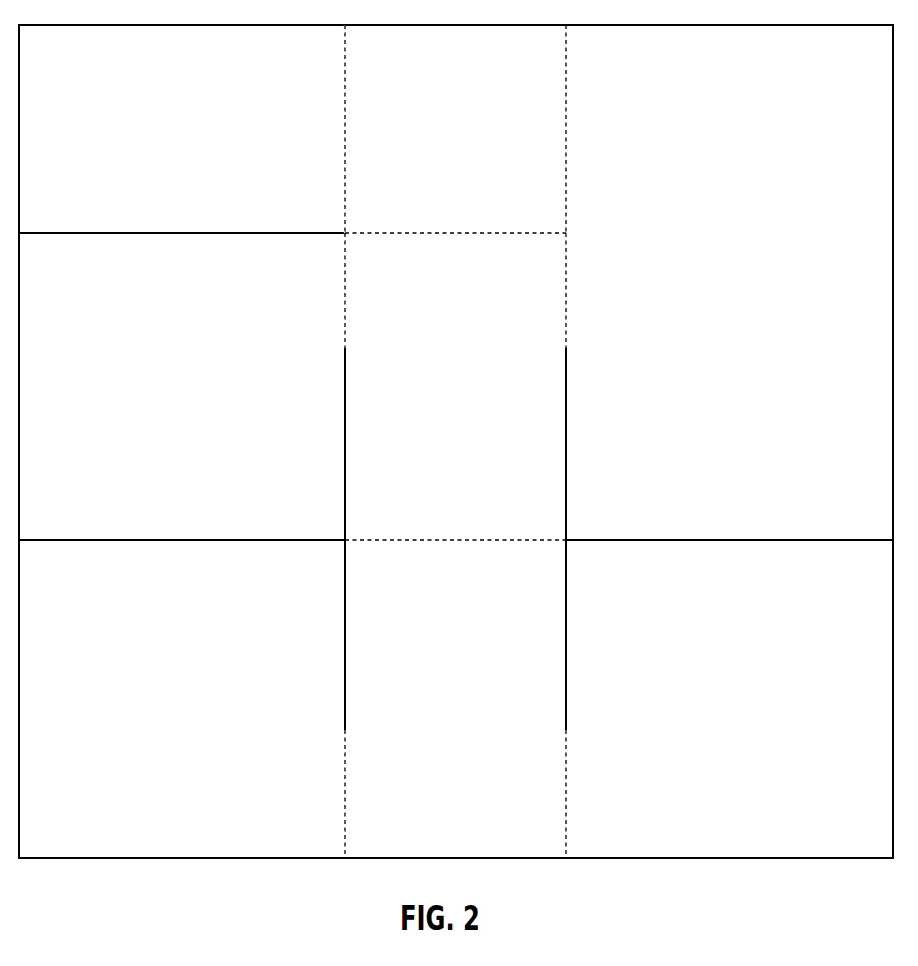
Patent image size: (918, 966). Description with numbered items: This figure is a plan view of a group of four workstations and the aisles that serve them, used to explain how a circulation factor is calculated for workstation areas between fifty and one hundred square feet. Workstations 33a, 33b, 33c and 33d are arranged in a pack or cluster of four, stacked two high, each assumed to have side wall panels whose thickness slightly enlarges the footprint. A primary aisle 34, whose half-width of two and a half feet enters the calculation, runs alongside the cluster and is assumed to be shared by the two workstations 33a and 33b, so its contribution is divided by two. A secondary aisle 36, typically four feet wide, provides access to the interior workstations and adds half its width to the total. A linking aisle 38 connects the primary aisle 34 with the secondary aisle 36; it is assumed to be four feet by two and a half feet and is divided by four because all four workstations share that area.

The primary aisle 34 is at (195, 141).
The linking aisle 38 is at (470, 142).
The secondary aisle 36 is at (470, 397).
The workstation 33a is at (205, 396).
The workstation 33b is at (202, 711).
The workstation 33c is at (752, 397).
The workstation 33d is at (751, 711).